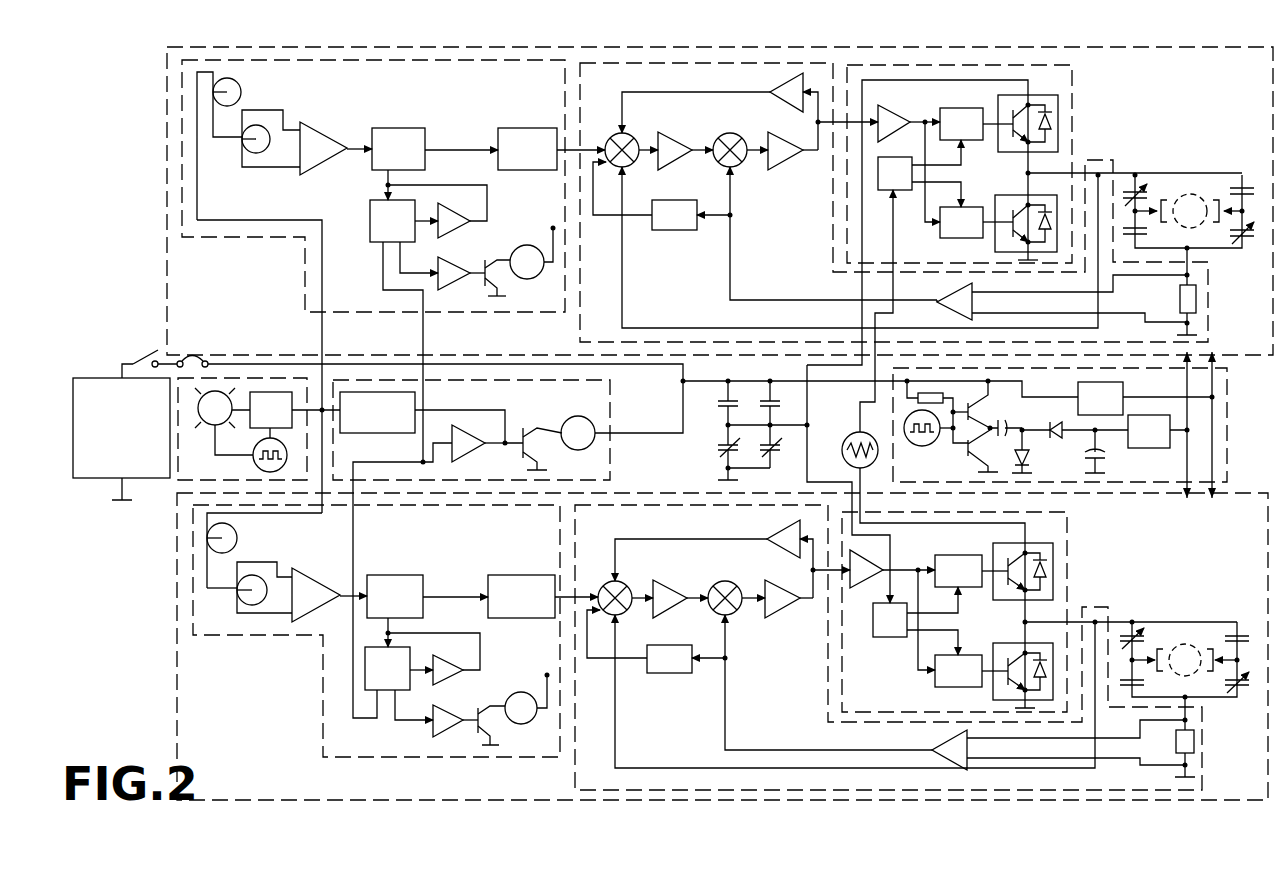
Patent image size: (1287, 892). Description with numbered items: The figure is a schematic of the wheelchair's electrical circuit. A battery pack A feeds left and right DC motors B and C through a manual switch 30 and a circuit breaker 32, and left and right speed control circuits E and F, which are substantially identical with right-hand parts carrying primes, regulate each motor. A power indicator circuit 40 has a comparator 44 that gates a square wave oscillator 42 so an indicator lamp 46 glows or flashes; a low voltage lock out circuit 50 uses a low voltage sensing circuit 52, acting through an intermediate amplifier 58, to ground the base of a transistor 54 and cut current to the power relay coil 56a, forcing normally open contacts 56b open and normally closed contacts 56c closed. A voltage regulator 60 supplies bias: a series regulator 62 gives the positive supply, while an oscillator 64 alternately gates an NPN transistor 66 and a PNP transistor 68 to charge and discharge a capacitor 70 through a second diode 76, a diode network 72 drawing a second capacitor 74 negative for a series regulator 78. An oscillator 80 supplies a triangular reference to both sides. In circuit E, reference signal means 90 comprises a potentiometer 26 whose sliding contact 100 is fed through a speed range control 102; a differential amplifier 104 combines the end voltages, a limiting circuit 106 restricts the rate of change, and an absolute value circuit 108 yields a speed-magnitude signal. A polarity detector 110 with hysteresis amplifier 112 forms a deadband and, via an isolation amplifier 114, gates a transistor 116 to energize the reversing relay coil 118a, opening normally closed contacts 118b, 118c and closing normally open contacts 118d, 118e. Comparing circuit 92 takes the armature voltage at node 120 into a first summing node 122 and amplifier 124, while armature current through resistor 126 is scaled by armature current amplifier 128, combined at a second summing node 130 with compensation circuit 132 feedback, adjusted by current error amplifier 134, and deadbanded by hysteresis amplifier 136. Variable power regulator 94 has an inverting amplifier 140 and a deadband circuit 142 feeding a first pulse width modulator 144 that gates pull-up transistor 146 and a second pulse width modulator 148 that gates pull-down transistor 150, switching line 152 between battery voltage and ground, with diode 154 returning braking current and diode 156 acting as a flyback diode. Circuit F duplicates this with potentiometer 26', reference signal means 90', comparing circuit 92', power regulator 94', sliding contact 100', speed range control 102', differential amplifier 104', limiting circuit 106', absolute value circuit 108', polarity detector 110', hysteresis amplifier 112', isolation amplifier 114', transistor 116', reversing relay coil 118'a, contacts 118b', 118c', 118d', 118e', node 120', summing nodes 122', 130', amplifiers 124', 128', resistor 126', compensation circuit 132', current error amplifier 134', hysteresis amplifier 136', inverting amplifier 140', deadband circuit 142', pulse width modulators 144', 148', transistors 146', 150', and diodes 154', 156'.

The battery pack A is at (160, 480).
The left DC electric motor B is at (1191, 194).
The right DC electric motor C is at (1195, 645).
The left speed control circuit E is at (167, 184).
The right speed control circuit F is at (177, 682).
The potentiometer 26 is at (248, 146).
The potentiometer 26' is at (220, 565).
The manual switch 30 is at (156, 350).
The manual circuit breaker 32 is at (186, 358).
The power indicator circuit 40 is at (259, 402).
The gated square wave oscillator 42 is at (253, 457).
The comparator 44 is at (286, 415).
The indicator lamp 46 is at (213, 422).
The low voltage lock out circuit 50 is at (509, 430).
The low voltage sensing circuit 52 is at (400, 434).
The transistor 54 is at (528, 424).
The power relay coil 56a is at (598, 438).
The normally open contacts 56b is at (780, 390).
The normally closed contacts 56c is at (726, 457).
The amplifier 58 is at (472, 450).
The voltage regulator 60 is at (1079, 425).
The series regulator 62 is at (1078, 390).
The oscillator 64 is at (925, 447).
The NPN transistor 66 is at (980, 420).
The PNP transistor 68 is at (966, 451).
The capacitor 70 is at (1008, 425).
The diode network 72 is at (1058, 434).
The second capacitor 74 is at (1085, 464).
The second diode 76 is at (1014, 456).
The series regulator 78 is at (1132, 448).
The oscillator 80 is at (850, 437).
The reference signal means 90 is at (373, 200).
The reference signal means 90' is at (376, 648).
The speed comparing circuit 92 is at (859, 202).
The speed comparing circuit 92' is at (888, 647).
The variable power regulator 94 is at (979, 164).
The variable power regulator 94' is at (983, 612).
The sliding contact 100 is at (234, 152).
The sliding contact 100' is at (252, 590).
The speed range control 102 is at (249, 89).
The speed range control 102' is at (249, 538).
The differential amplifier 104 is at (336, 133).
The differential amplifier 104' is at (329, 582).
The limiting circuit 106 is at (435, 146).
The limiting circuit 106' is at (427, 594).
The absolute value circuit 108 is at (551, 131).
The absolute value circuit 108' is at (543, 580).
The polarity detector 110 is at (365, 214).
The polarity detector 110' is at (370, 699).
The hysteresis amplifier 112 is at (438, 199).
The hysteresis amplifier 112' is at (465, 657).
The isolation amplifier 114 is at (464, 262).
The isolation amplifier 114' is at (435, 721).
The transistor 116 is at (517, 285).
The transistor 116' is at (516, 729).
The reversing relay coil 118a is at (527, 245).
The reversing relay coil 118'a is at (524, 691).
The normally closed reversing relay contacts 118b is at (1155, 177).
The normally closed reversing relay contacts 118b' is at (1162, 620).
The normally closed reversing relay contacts 118c is at (1245, 249).
The normally closed reversing relay contacts 118c' is at (1241, 708).
The normally open reversing relay contacts 118d is at (1149, 268).
The normally open reversing relay contacts 118d' is at (1164, 690).
The normally open reversing relay contacts 118e is at (1242, 160).
The normally open reversing relay contacts 118e' is at (1239, 597).
The node 120 is at (1183, 229).
The node 120' is at (1181, 665).
The first summing node 122 is at (620, 131).
The first summing node 122' is at (615, 579).
The amplifier 124 is at (685, 132).
The amplifier 124' is at (676, 580).
The resistor 126 is at (1216, 291).
The resistor 126' is at (1216, 736).
The armature current amplifier 128 is at (1047, 302).
The armature current amplifier 128' is at (1023, 745).
The second summing node 130 is at (740, 131).
The second summing node 130' is at (736, 579).
The compensation circuit 132 is at (663, 211).
The compensation circuit 132' is at (657, 657).
The current error amplifier 134 is at (793, 165).
The current error amplifier 134' is at (775, 619).
The hysteresis amplifier 136 is at (763, 87).
The hysteresis amplifier 136' is at (760, 535).
The inverting amplifier 140 is at (909, 153).
The inverting amplifier 140' is at (859, 610).
The deadband circuit 142 is at (867, 183).
The deadband circuit 142' is at (909, 629).
The first pulse width modulator 144 is at (976, 112).
The first pulse width modulator 144' is at (953, 557).
The pull-up transistor 146 is at (1049, 135).
The pull-up transistor 146' is at (1039, 563).
The second pulse width modulator 148 is at (960, 234).
The second pulse width modulator 148' is at (934, 682).
The pull-down transistor 150 is at (1049, 188).
The pull-down transistor 150' is at (996, 678).
The line 152 is at (1060, 153).
The diode 154 is at (1077, 119).
The diode 154' is at (1078, 571).
The diode 156 is at (1134, 195).
The diode 156' is at (1102, 637).